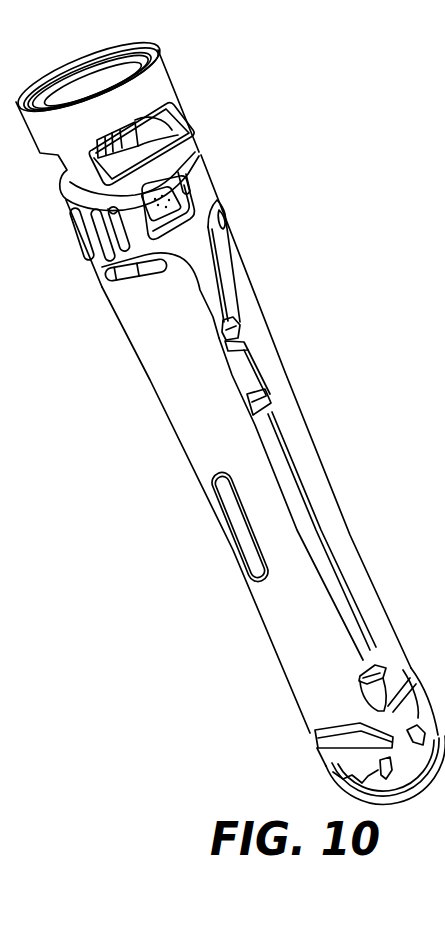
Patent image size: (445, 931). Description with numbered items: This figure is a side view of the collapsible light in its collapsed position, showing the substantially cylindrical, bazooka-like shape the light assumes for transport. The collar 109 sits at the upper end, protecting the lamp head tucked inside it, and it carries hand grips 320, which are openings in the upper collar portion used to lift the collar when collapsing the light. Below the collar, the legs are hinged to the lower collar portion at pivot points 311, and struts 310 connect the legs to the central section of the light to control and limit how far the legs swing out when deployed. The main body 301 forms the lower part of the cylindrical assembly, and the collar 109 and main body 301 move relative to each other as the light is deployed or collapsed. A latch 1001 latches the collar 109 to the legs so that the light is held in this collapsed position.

The collar 109 is at (168, 56).
The hand grips 320 is at (193, 131).
The struts 310 is at (205, 444).
The pivot points 311 is at (106, 279).
The latch 1001 is at (259, 395).
The main body 301 is at (390, 617).